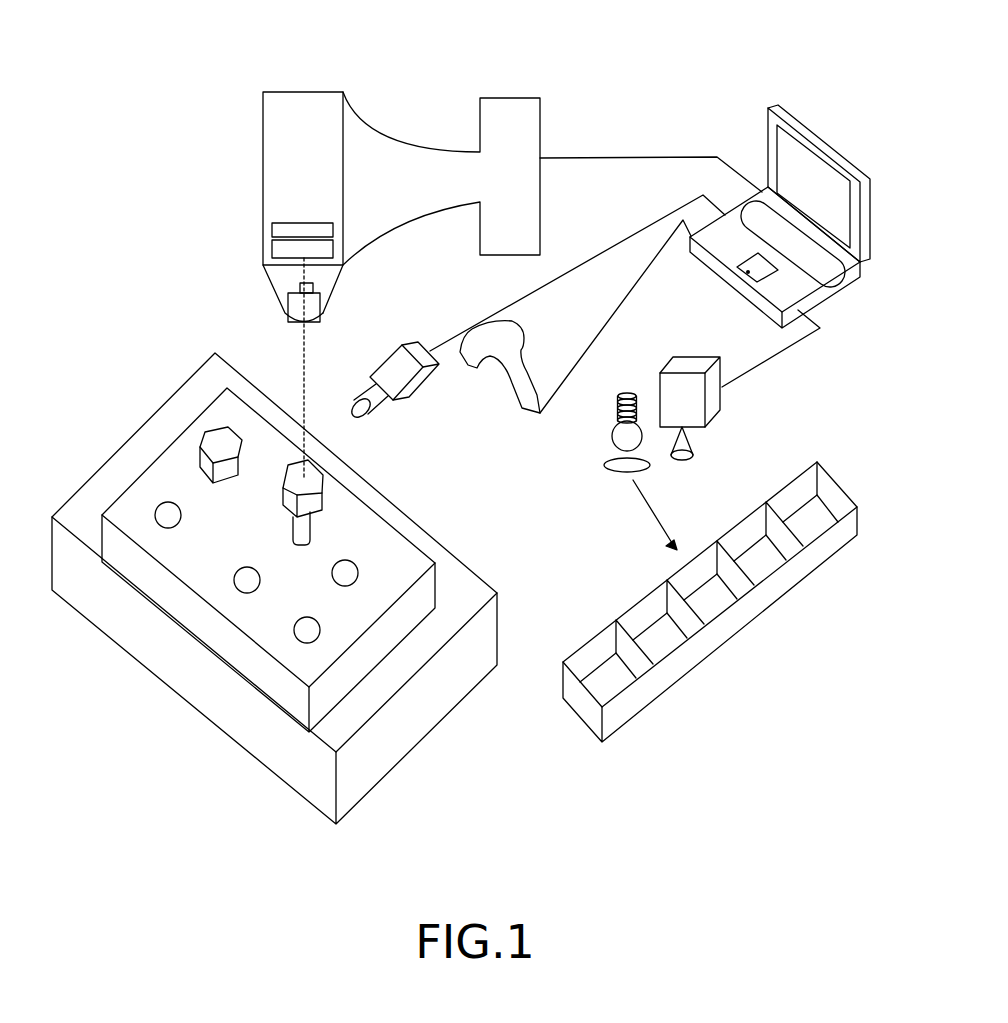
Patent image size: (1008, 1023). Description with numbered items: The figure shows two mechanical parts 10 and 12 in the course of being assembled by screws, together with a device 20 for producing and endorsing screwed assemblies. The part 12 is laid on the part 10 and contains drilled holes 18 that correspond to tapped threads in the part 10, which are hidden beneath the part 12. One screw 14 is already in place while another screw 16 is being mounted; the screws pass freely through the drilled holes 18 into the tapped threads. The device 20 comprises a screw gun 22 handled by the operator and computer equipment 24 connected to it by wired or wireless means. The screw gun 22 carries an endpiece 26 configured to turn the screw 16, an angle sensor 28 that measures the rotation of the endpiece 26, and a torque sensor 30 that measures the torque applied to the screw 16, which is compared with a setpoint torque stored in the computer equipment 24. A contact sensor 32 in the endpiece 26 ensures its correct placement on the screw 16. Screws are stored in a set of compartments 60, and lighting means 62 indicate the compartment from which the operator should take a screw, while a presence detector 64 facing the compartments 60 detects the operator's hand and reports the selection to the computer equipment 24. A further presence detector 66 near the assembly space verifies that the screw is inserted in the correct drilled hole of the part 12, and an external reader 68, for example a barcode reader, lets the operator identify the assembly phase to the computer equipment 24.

The mechanical part 10 is at (290, 747).
The mechanical part 12 is at (258, 660).
The screw 14 is at (220, 447).
The screw 16 is at (325, 478).
The drilled holes 18 is at (298, 621).
The device for producing and endorsing screwed assemblies 20 is at (729, 85).
The screw gun 22 is at (418, 158).
The computer equipment 24 is at (823, 138).
The endpiece 26 is at (327, 307).
The angle sensor 28 is at (278, 247).
The torque sensor 30 is at (278, 230).
The contact sensor 32 is at (298, 286).
The set of compartments 60 is at (747, 608).
The lighting means 62 is at (591, 448).
The presence detector 64 is at (710, 404).
The presence detector 66 is at (417, 382).
The external reader 68 is at (523, 333).